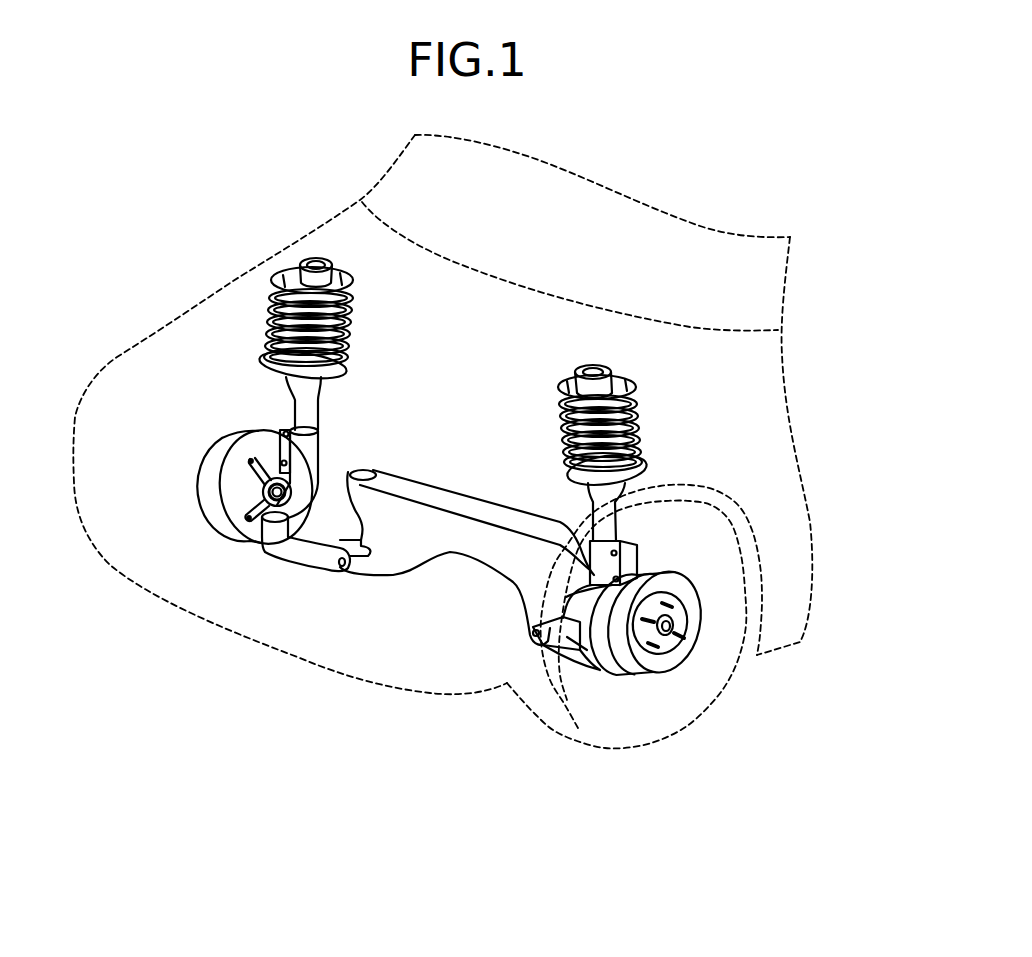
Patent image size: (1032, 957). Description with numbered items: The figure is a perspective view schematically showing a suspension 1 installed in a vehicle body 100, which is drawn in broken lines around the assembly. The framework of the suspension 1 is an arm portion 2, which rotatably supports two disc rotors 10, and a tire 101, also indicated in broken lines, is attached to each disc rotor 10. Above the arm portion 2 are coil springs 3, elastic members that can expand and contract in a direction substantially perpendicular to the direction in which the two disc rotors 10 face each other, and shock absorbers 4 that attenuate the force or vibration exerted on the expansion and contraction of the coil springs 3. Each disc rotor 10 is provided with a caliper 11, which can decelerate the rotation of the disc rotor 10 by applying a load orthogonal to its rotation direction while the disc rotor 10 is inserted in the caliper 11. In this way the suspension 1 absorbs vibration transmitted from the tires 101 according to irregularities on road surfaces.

The vehicle body 100 is at (235, 283).
The tire 101 is at (730, 702).
The suspension 1 is at (716, 475).
The arm portion 2 is at (393, 597).
The coil spring 3 is at (640, 436).
The shock absorber 4 is at (610, 510).
The disc rotor 10 is at (663, 660).
The caliper 11 is at (610, 660).